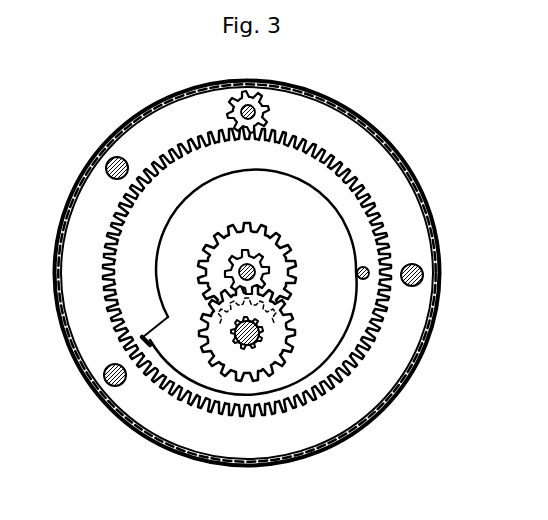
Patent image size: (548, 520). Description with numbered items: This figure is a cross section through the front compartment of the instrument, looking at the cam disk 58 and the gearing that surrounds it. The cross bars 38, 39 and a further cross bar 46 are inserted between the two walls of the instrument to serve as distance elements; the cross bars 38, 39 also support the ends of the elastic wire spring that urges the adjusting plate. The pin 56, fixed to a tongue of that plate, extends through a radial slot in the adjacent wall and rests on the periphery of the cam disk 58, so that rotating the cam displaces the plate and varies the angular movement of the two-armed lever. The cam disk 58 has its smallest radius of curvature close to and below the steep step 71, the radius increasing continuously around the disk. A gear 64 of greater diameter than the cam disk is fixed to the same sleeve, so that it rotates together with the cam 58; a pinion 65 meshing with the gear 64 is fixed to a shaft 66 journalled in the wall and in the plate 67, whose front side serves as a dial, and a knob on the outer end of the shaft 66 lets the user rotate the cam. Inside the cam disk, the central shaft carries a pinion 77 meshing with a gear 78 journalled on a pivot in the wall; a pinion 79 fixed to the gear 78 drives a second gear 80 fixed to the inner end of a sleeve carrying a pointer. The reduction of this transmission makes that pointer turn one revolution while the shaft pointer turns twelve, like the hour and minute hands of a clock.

The cross bar 38 is at (107, 162).
The cross bar 39 is at (106, 382).
The cross bar 46 is at (423, 276).
The pin 56 is at (368, 268).
The cam disk 58 is at (153, 255).
The gear 64 is at (348, 204).
The pinion 65 is at (268, 105).
The shaft 66 is at (232, 103).
The plate 67 is at (382, 153).
The steep step 71 is at (166, 317).
The pinion 77 is at (268, 273).
The gear 78 is at (282, 328).
The pinion 79 is at (232, 336).
The second gear 80 is at (267, 247).